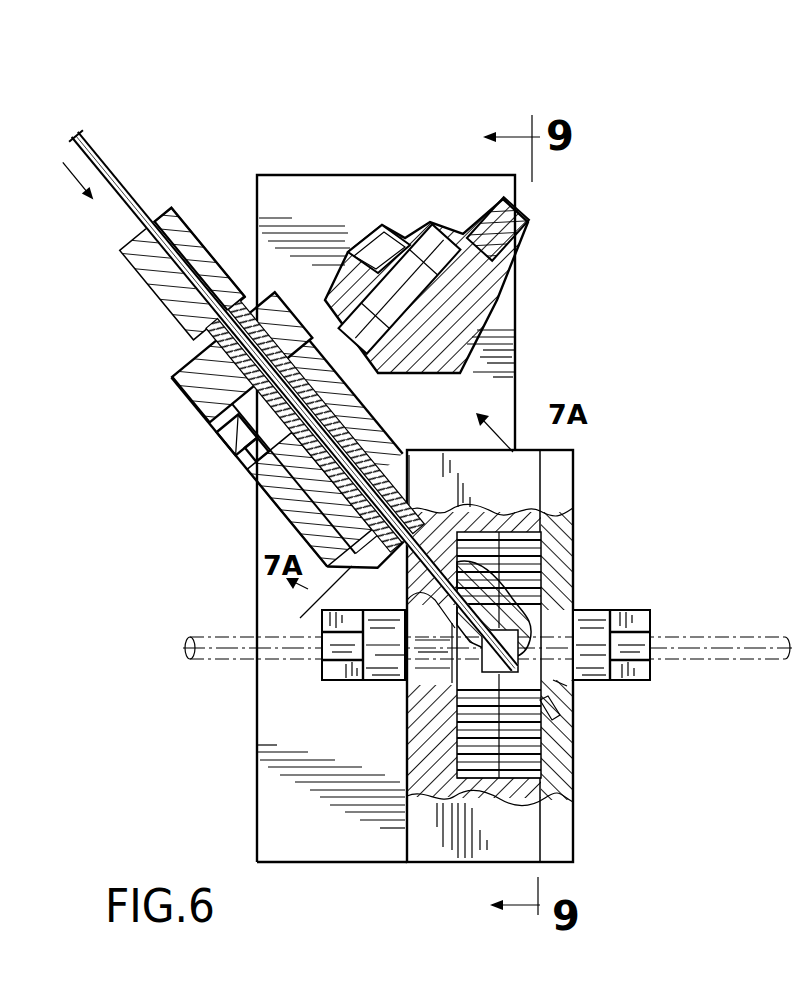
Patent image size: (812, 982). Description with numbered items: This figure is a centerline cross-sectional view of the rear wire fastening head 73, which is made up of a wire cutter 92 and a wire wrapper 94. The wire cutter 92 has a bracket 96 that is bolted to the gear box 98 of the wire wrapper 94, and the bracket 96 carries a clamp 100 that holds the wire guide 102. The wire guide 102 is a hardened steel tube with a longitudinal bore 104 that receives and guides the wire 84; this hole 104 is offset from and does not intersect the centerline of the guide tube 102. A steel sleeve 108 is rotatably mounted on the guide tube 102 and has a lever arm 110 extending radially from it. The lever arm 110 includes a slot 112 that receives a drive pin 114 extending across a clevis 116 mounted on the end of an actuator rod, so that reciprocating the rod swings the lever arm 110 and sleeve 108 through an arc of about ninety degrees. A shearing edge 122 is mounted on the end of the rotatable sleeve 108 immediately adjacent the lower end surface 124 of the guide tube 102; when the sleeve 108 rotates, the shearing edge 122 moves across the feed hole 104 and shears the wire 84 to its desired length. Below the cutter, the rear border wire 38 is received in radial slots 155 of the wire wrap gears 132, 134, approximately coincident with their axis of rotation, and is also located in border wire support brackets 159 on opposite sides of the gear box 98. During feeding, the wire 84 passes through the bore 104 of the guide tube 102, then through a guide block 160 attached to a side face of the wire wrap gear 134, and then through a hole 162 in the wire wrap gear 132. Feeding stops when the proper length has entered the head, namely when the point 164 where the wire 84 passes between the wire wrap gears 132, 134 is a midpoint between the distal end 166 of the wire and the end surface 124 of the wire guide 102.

The rear border wire 38 is at (712, 636).
The rear wire fastening head 73 is at (617, 181).
The wire 84 is at (100, 157).
The wire cutter 92 is at (178, 397).
The wire wrapper 94 is at (583, 488).
The bracket 96 is at (283, 497).
The gear box 98 is at (437, 847).
The clamp 100 is at (172, 376).
The wire guide 102 is at (133, 263).
The longitudinal bore 104 is at (152, 220).
The sleeve 108 is at (230, 450).
The lever arm 110 is at (498, 244).
The slot 112 is at (450, 256).
The drive pin 114 is at (357, 247).
The clevis 116 is at (497, 300).
The shearing edge 122 is at (410, 507).
The lower end surface 124 is at (377, 547).
The wire wrap gear 132 is at (533, 756).
The wire wrap gear 134 is at (488, 765).
The radial slot 155 is at (537, 653).
The border wire support bracket 159 is at (333, 681).
The guide block 160 is at (430, 600).
The hole 162 is at (575, 687).
The point 164 is at (566, 593).
The distal end 166 is at (557, 718).